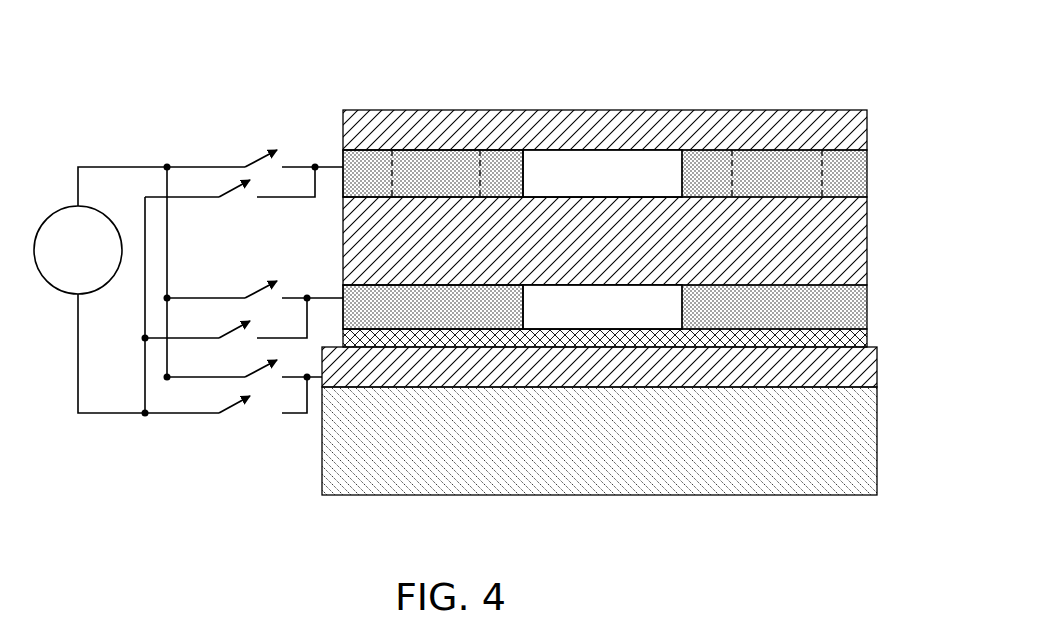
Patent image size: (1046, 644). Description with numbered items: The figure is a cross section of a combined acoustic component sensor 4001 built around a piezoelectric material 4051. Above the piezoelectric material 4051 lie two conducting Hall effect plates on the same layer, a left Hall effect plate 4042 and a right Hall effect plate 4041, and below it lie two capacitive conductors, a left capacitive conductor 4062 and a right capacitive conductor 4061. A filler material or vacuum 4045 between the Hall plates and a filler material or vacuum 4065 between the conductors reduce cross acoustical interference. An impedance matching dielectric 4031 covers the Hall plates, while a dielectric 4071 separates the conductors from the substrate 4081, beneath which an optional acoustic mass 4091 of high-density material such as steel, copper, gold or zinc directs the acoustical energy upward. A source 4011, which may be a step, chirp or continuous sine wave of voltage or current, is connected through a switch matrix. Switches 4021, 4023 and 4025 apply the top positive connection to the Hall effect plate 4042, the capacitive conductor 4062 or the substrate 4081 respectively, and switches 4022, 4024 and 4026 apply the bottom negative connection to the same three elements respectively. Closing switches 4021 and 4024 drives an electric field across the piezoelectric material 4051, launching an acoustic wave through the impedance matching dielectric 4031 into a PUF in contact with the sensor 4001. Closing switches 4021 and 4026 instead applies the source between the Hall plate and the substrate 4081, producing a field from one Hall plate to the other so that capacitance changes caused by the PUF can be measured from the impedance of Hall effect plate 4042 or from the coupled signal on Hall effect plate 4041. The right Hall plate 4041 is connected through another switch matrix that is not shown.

The combined acoustic component sensor 4001 is at (177, 90).
The source 4011 is at (62, 292).
The switch 4021 is at (262, 160).
The switch 4022 is at (232, 190).
The switch 4023 is at (258, 290).
The switch 4024 is at (232, 332).
The switch 4025 is at (258, 370).
The switch 4026 is at (232, 405).
The impedance matching dielectric 4031 is at (867, 135).
The Hall effect plate 4041 is at (867, 182).
The Hall effect plate 4042 is at (365, 182).
The filler material or vacuum 4045 is at (557, 175).
The piezoelectric material 4051 is at (867, 245).
The capacitive conductor 4061 is at (867, 305).
The capacitive conductor 4062 is at (452, 300).
The filler material or vacuum 4065 is at (618, 308).
The dielectric 4071 is at (867, 340).
The substrate 4081 is at (877, 368).
The acoustic mass 4091 is at (877, 445).